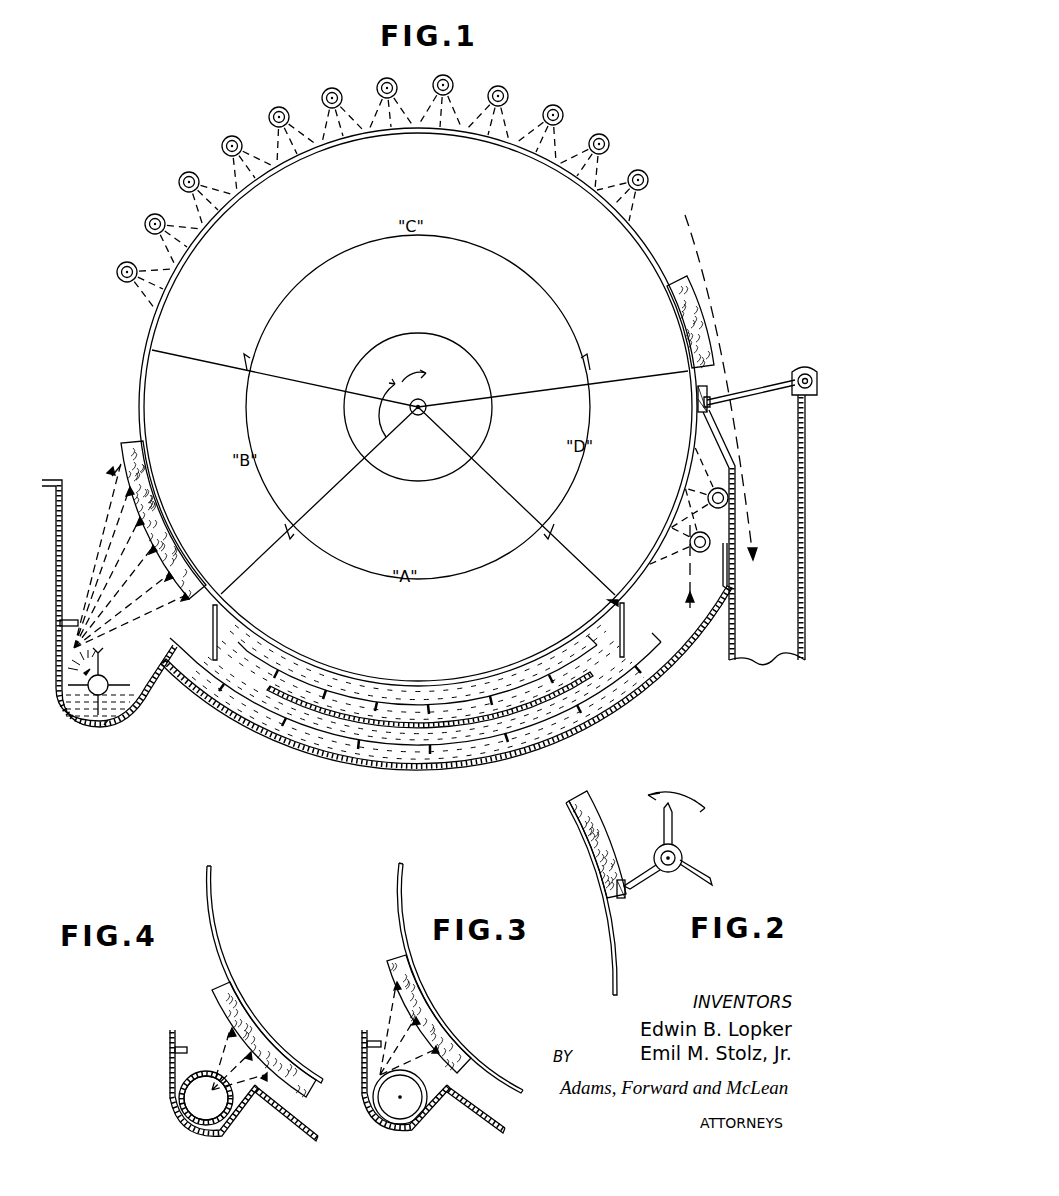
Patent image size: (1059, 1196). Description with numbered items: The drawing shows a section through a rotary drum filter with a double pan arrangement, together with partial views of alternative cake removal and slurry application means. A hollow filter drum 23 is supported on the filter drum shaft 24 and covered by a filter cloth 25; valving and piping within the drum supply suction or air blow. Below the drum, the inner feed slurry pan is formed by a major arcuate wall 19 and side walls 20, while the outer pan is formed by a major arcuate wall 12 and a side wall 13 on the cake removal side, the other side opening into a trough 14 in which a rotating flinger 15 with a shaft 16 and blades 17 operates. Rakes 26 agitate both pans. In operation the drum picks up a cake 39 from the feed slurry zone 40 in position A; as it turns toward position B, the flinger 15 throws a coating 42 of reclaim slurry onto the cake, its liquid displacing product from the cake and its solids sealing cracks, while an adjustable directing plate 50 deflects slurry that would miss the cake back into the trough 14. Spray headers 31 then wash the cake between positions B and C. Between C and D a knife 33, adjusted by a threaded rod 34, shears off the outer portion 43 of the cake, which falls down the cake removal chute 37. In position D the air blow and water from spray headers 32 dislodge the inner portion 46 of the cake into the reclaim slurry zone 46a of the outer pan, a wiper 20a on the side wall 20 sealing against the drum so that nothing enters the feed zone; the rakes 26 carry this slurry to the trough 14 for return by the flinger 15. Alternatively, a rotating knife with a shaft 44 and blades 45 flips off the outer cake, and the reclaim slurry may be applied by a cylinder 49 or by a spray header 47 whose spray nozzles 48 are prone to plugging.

In FIG. 1, the major arcuate wall 12 is at (455, 764).
In FIG. 3, the major arcuate wall 12 is at (472, 1110).
In FIG. 4, the major arcuate wall 12 is at (290, 1112).
In FIG. 1, the side wall 13 is at (723, 568).
In FIG. 1, the trough 14 is at (142, 690).
In FIG. 3, the trough 14 is at (434, 1112).
In FIG. 4, the trough 14 is at (242, 1114).
In FIG. 1, the rotating flinger 15 is at (86, 672).
In FIG. 1, the shaft 16 is at (96, 700).
In FIG. 1, the blades 17 is at (106, 722).
In FIG. 1, the major arcuate wall 19 is at (548, 738).
In FIG. 1, the side walls 20 is at (211, 632).
In FIG. 1, the flexible strip or wiper 20a is at (620, 602).
In FIG. 1, the hollow filter drum 23 is at (152, 358).
In FIG. 2, the hollow filter drum 23 is at (605, 975).
In FIG. 3, the hollow filter drum 23 is at (410, 917).
In FIG. 4, the hollow filter drum 23 is at (226, 932).
In FIG. 1, the filter drum shaft 24 is at (378, 352).
In FIG. 1, the filter cloth 25 is at (150, 385).
In FIG. 2, the filter cloth 25 is at (612, 940).
In FIG. 3, the filter cloth 25 is at (406, 935).
In FIG. 4, the filter cloth 25 is at (224, 970).
In FIG. 1, the rakes 26 is at (508, 735).
In FIG. 1, the spray headers 31 is at (192, 172).
In FIG. 1, the spray headers 32 is at (690, 540).
In FIG. 1, the knife 33 is at (712, 398).
In FIG. 1, the threaded rod 34 is at (797, 383).
In FIG. 1, the cake removal chute 37 is at (803, 660).
In FIG. 1, the cake 39 is at (137, 442).
In FIG. 1, the feed slurry zone 40 is at (265, 708).
In FIG. 1, the coating of reclaim slurry 42 is at (112, 476).
In FIG. 1, the outer portion of the cake 43 is at (698, 322).
In FIG. 2, the outer portion of the cake 43 is at (630, 858).
In FIG. 3, the outer portion of the cake 43 is at (429, 1014).
In FIG. 2, the shaft 44 is at (676, 850).
In FIG. 2, the blades 45 is at (700, 870).
In FIG. 1, the inner portion of the cake 46 is at (697, 392).
In FIG. 2, the inner portion of the cake 46 is at (627, 896).
In FIG. 1, the reclaim slurry zone 46a is at (395, 758).
In FIG. 4, the spray header 47 is at (196, 1078).
In FIG. 4, the spray nozzles 48 is at (206, 1098).
In FIG. 3, the cylinder 49 is at (420, 1086).
In FIG. 1, the adjustable directing plate 50 is at (70, 618).
In FIG. 3, the adjustable directing plate 50 is at (374, 1040).